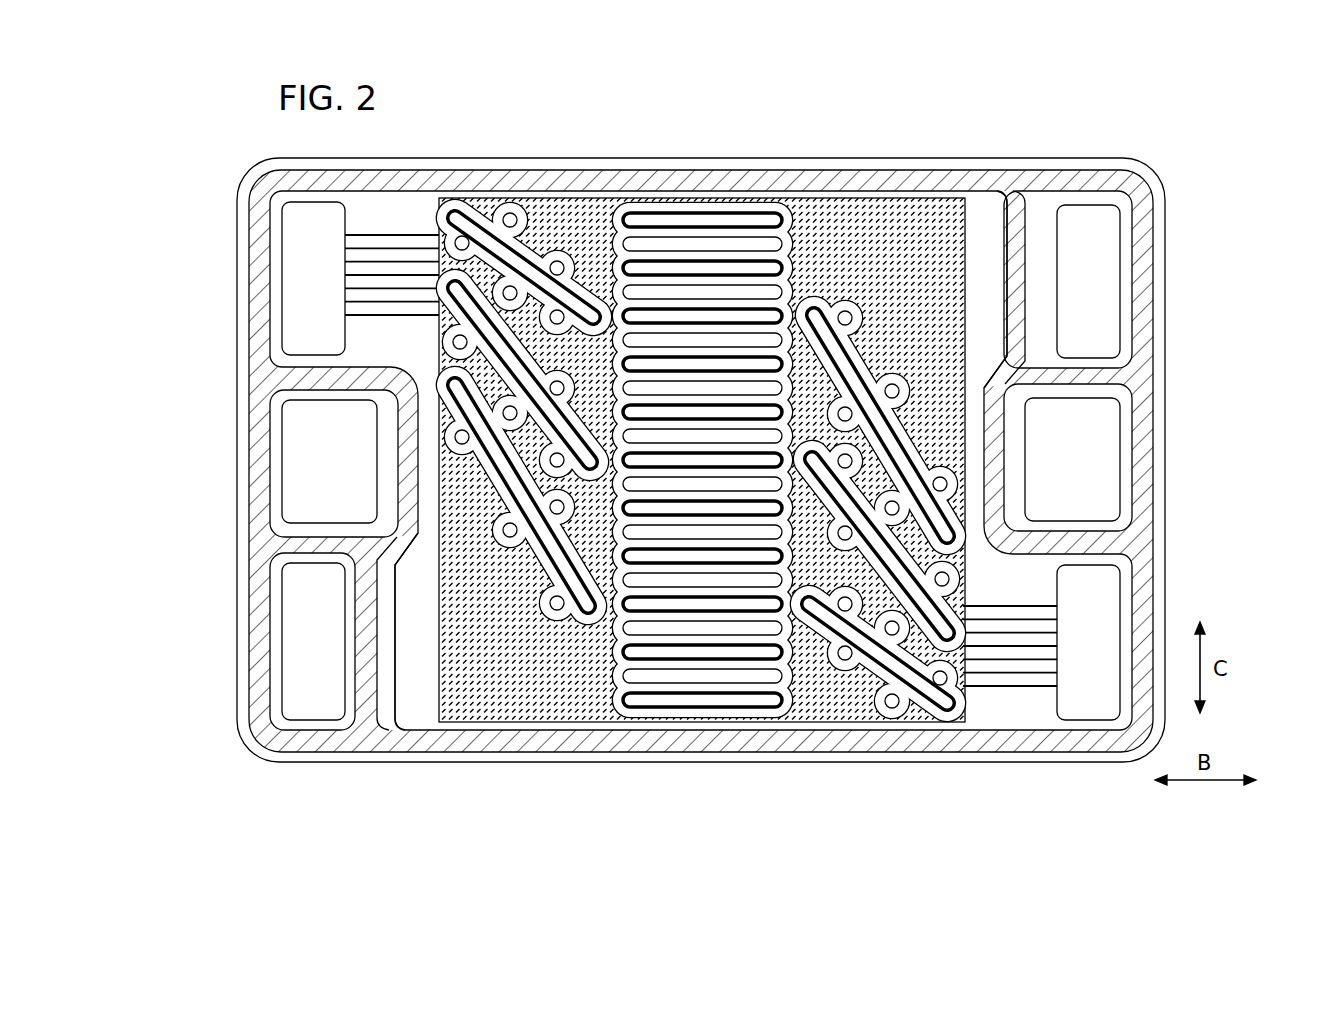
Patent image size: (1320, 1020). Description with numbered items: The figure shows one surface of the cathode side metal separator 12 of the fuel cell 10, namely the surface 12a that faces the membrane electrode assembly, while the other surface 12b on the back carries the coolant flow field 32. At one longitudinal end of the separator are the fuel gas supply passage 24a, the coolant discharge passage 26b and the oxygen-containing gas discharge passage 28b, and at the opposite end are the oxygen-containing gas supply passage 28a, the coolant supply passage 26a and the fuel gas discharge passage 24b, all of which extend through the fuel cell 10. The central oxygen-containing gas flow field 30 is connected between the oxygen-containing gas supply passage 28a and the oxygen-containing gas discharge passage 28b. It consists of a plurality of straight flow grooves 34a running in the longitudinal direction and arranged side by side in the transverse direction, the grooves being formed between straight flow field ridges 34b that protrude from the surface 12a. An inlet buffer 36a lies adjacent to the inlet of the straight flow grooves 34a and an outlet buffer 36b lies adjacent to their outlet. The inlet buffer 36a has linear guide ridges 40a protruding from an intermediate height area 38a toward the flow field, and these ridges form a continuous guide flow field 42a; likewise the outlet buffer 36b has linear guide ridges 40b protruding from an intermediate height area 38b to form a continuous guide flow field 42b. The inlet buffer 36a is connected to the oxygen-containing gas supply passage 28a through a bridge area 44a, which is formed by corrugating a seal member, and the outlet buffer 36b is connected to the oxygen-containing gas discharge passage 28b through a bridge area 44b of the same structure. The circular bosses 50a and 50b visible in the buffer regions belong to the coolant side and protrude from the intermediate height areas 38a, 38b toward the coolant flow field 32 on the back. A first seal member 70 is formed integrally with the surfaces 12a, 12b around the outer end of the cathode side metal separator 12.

The fuel cell 10 is at (690, 462).
The cathode side metal separator 12 is at (690, 470).
The surface 12a is at (1030, 762).
The other surface 12b is at (1075, 762).
The fuel gas supply passage 24a is at (1088, 281).
The fuel gas discharge passage 24b is at (313, 641).
The coolant supply passage 26a is at (1085, 482).
The coolant discharge passage 26b is at (302, 428).
The oxygen-containing gas supply passage 28a is at (313, 278).
The oxygen-containing gas discharge passage 28b is at (1088, 642).
The oxygen-containing gas flow field 30 is at (712, 470).
The coolant flow field 32 is at (702, 212).
The straight flow grooves 34a is at (657, 245).
The straight flow field ridges 34b is at (638, 268).
The inlet buffer 36a is at (472, 688).
The outlet buffer 36b is at (696, 469).
The intermediate height area 38a is at (666, 504).
The intermediate height area 38b is at (696, 463).
The linear guide ridges 40a is at (384, 372).
The linear guide ridges 40b is at (1022, 552).
The continuous guide flow field 42a is at (537, 460).
The continuous guide flow field 42b is at (868, 458).
The bridge area 44a is at (393, 322).
The bridge area 44b is at (1011, 613).
The bosses 50a is at (505, 218).
The bosses 50b is at (955, 706).
The first seal member 70 is at (701, 472).